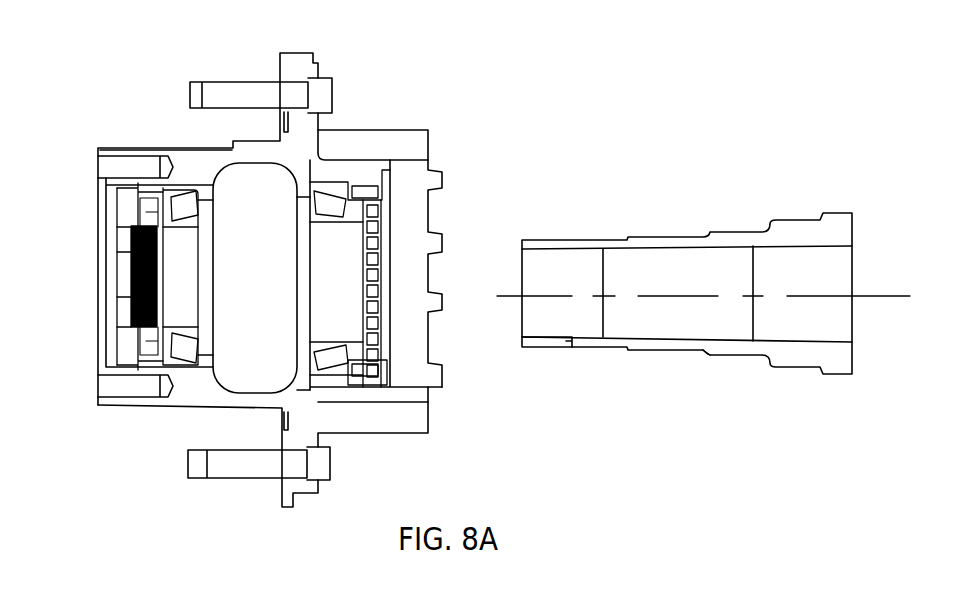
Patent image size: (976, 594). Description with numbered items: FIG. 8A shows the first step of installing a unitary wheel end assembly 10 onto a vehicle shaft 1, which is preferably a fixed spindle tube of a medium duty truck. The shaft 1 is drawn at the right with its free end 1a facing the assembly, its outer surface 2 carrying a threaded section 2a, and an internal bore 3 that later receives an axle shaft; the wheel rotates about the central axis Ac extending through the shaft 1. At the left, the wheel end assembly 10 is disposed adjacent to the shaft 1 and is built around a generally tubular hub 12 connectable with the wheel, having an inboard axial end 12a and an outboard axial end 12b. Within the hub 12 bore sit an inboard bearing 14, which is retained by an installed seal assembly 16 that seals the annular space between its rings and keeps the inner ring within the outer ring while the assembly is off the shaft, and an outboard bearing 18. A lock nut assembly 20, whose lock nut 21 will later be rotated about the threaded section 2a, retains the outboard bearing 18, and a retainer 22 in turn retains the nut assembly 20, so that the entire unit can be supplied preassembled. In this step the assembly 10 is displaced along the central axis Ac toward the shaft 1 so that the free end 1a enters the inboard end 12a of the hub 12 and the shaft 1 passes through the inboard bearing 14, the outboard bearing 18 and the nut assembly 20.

The shaft 1 is at (678, 160).
The free end 1a is at (523, 318).
The outer surface 2 is at (759, 231).
The threaded section 2a is at (556, 238).
The bore 3 is at (674, 333).
The central axis Ac is at (888, 298).
The wheel end assembly 10 is at (179, 57).
The hub 12 is at (134, 410).
The inboard axial end 12a is at (443, 178).
The outboard axial end 12b is at (98, 150).
The inboard bearing 14 is at (334, 181).
The seal assembly 16 is at (394, 229).
The outboard bearing 18 is at (187, 192).
The lock nut assembly 20 is at (105, 342).
The lock nut 21 is at (124, 214).
The retainer 22 is at (135, 183).